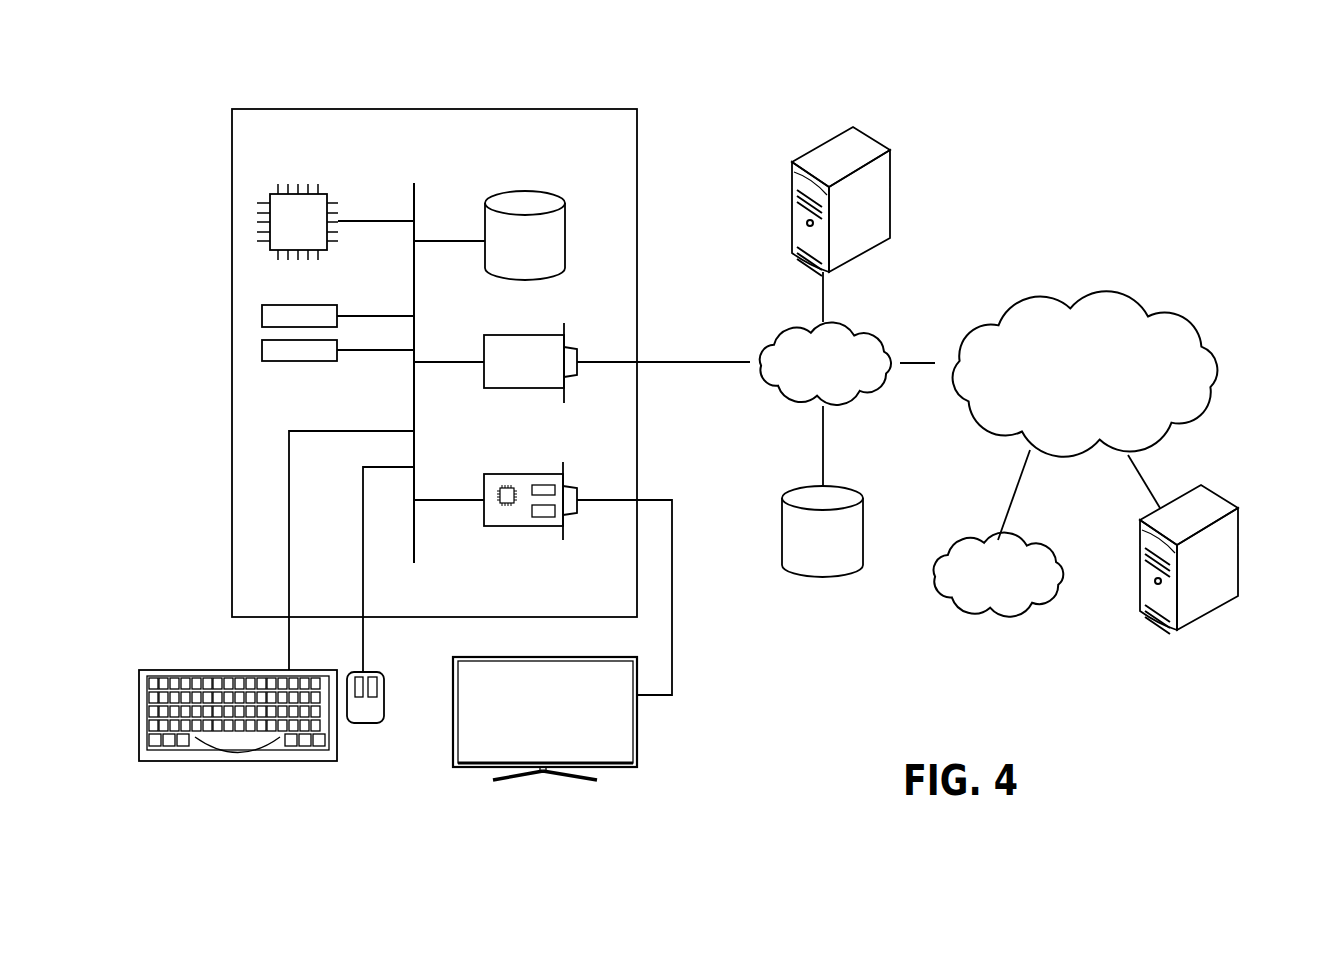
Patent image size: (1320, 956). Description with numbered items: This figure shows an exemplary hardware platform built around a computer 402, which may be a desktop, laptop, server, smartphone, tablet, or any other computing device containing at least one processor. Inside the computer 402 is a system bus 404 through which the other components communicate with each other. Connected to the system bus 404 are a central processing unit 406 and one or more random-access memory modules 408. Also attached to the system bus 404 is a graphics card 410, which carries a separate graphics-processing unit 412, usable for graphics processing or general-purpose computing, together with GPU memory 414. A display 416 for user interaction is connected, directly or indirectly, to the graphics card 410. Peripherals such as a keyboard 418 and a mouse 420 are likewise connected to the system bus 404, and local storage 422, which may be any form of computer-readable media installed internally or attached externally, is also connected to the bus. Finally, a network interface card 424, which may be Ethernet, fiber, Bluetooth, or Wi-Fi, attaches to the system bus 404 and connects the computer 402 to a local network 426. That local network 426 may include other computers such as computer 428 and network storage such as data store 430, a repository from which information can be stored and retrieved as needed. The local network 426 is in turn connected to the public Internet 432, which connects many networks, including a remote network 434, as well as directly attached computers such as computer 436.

The computer 402 is at (593, 108).
The system bus 404 is at (415, 192).
The central processing unit 406 is at (320, 188).
The random-access memory modules 408 is at (338, 347).
The graphics card 410 is at (484, 483).
The graphics-processing unit 412 is at (505, 507).
The GPU memory 414 is at (540, 517).
The display 416 is at (637, 747).
The keyboard 418 is at (238, 762).
The mouse 420 is at (362, 725).
The local storage 422 is at (568, 222).
The network interface card 424 is at (484, 347).
The local network 426 is at (873, 320).
The computer 428 is at (880, 135).
The data store 430 is at (855, 488).
The public Internet 432 is at (1127, 283).
The remote network 434 is at (1050, 532).
The computer 436 is at (1222, 487).